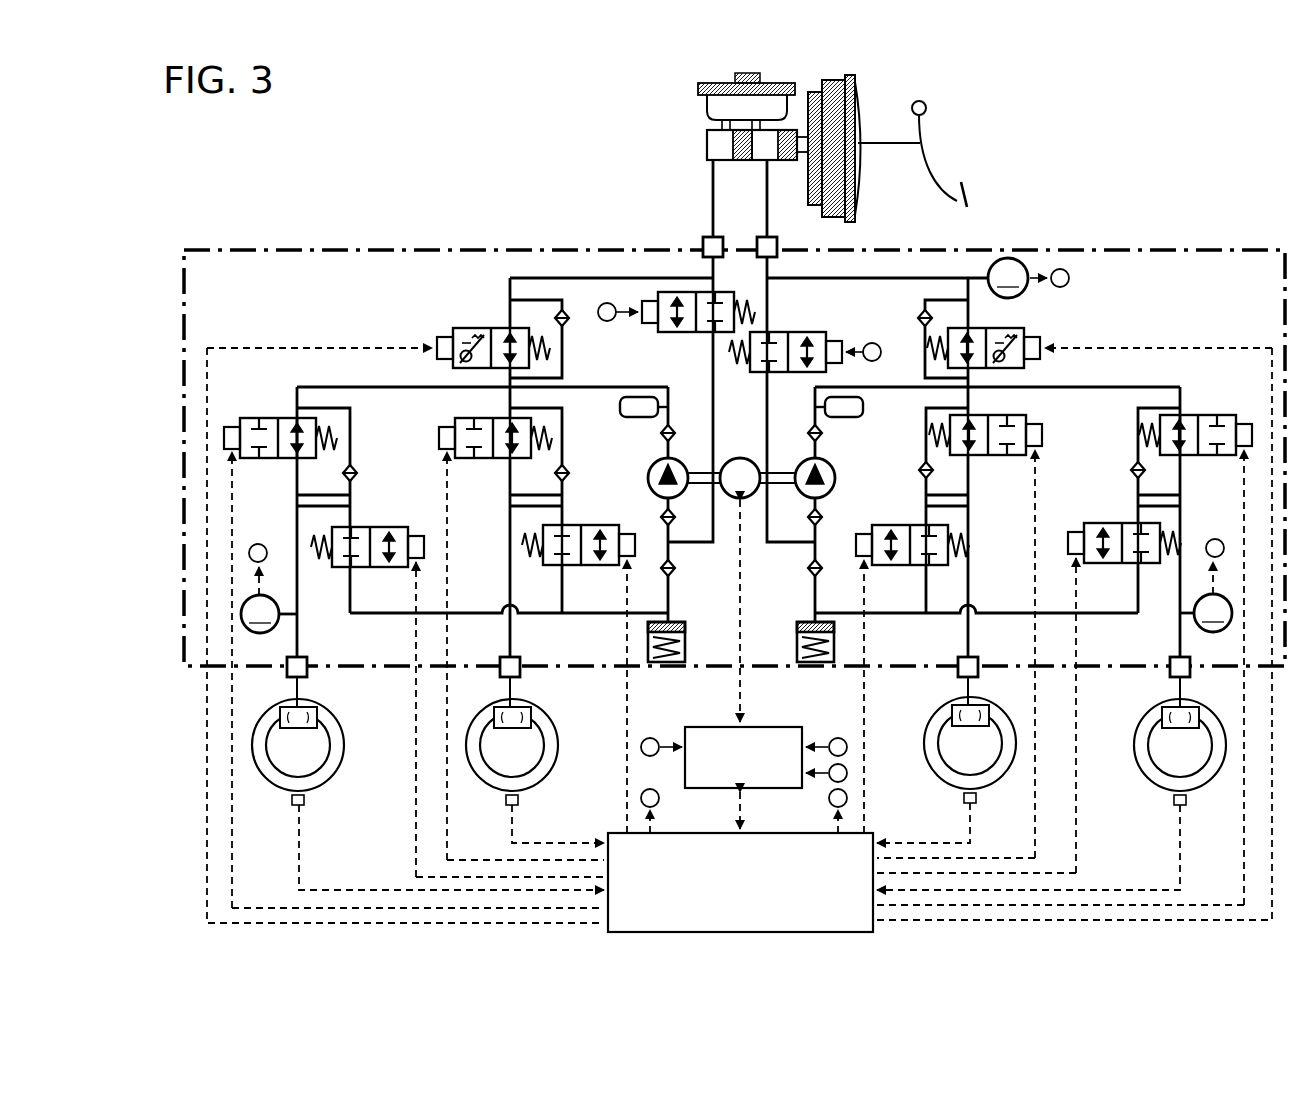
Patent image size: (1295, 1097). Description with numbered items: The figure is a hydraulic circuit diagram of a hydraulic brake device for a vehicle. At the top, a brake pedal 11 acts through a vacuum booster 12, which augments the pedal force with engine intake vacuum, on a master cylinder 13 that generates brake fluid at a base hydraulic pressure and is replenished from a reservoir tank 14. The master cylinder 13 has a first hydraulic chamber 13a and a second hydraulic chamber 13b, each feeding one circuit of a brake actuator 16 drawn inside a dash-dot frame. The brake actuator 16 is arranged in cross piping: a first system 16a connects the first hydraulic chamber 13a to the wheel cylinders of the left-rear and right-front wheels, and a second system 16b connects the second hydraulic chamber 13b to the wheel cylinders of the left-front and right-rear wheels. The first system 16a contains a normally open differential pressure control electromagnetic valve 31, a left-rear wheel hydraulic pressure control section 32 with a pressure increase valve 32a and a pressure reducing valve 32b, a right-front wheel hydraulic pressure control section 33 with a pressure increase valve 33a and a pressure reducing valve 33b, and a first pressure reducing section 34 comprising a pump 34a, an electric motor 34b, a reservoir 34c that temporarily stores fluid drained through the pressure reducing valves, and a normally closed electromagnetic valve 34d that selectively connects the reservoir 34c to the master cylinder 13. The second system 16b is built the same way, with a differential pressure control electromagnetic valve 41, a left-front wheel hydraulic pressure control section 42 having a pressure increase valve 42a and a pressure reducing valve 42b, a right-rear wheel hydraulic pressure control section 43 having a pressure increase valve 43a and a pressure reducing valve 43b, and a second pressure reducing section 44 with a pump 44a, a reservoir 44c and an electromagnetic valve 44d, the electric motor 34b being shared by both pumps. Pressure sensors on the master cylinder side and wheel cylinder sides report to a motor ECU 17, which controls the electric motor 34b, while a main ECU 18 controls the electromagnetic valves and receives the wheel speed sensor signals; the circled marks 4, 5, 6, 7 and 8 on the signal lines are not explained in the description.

The brake pedal 11 is at (937, 163).
The vacuum booster 12 is at (848, 76).
The master cylinder 13 is at (705, 147).
The first hydraulic chamber 13a is at (765, 162).
The second hydraulic chamber 13b is at (708, 153).
The reservoir tank 14 is at (745, 76).
The brake actuator 16 is at (1140, 249).
The first system 16a is at (905, 270).
The second system 16b is at (550, 270).
The motor ECU 17 is at (746, 780).
The main ECU 18 is at (762, 833).
The differential pressure control electromagnetic valve 31 is at (990, 329).
The left-rear wheel hydraulic pressure control section 32 is at (948, 627).
The pressure increase valve 32a is at (990, 416).
The pressure reducing valve 32b is at (905, 524).
The right-front wheel hydraulic pressure control section 33 is at (1167, 547).
The pressure increase valve 33a is at (1200, 415).
The pressure reducing valve 33b is at (1115, 522).
The first pressure reducing section 34 is at (784, 678).
The pump 34a is at (836, 479).
The electric motor 34b is at (740, 456).
The reservoir 34c is at (796, 636).
The electromagnetic valve 34d is at (786, 334).
The differential pressure control electromagnetic valve 41 is at (500, 327).
The left-front wheel hydraulic pressure control section 42 is at (306, 547).
The pressure increase valve 42a is at (272, 418).
The pressure reducing valve 42b is at (368, 526).
The right-rear wheel hydraulic pressure control section 43 is at (531, 629).
The pressure increase valve 43a is at (488, 419).
The pressure reducing valve 43b is at (580, 524).
The second pressure reducing section 44 is at (702, 678).
The pump 44a is at (655, 479).
The reservoir 44c is at (687, 636).
The electromagnetic valve 44d is at (693, 334).
The signal line 4 is at (829, 774).
The signal line 5 is at (661, 748).
The signal line 6 is at (840, 811).
The signal line 7 is at (652, 811).
The signal line 8 is at (829, 748).